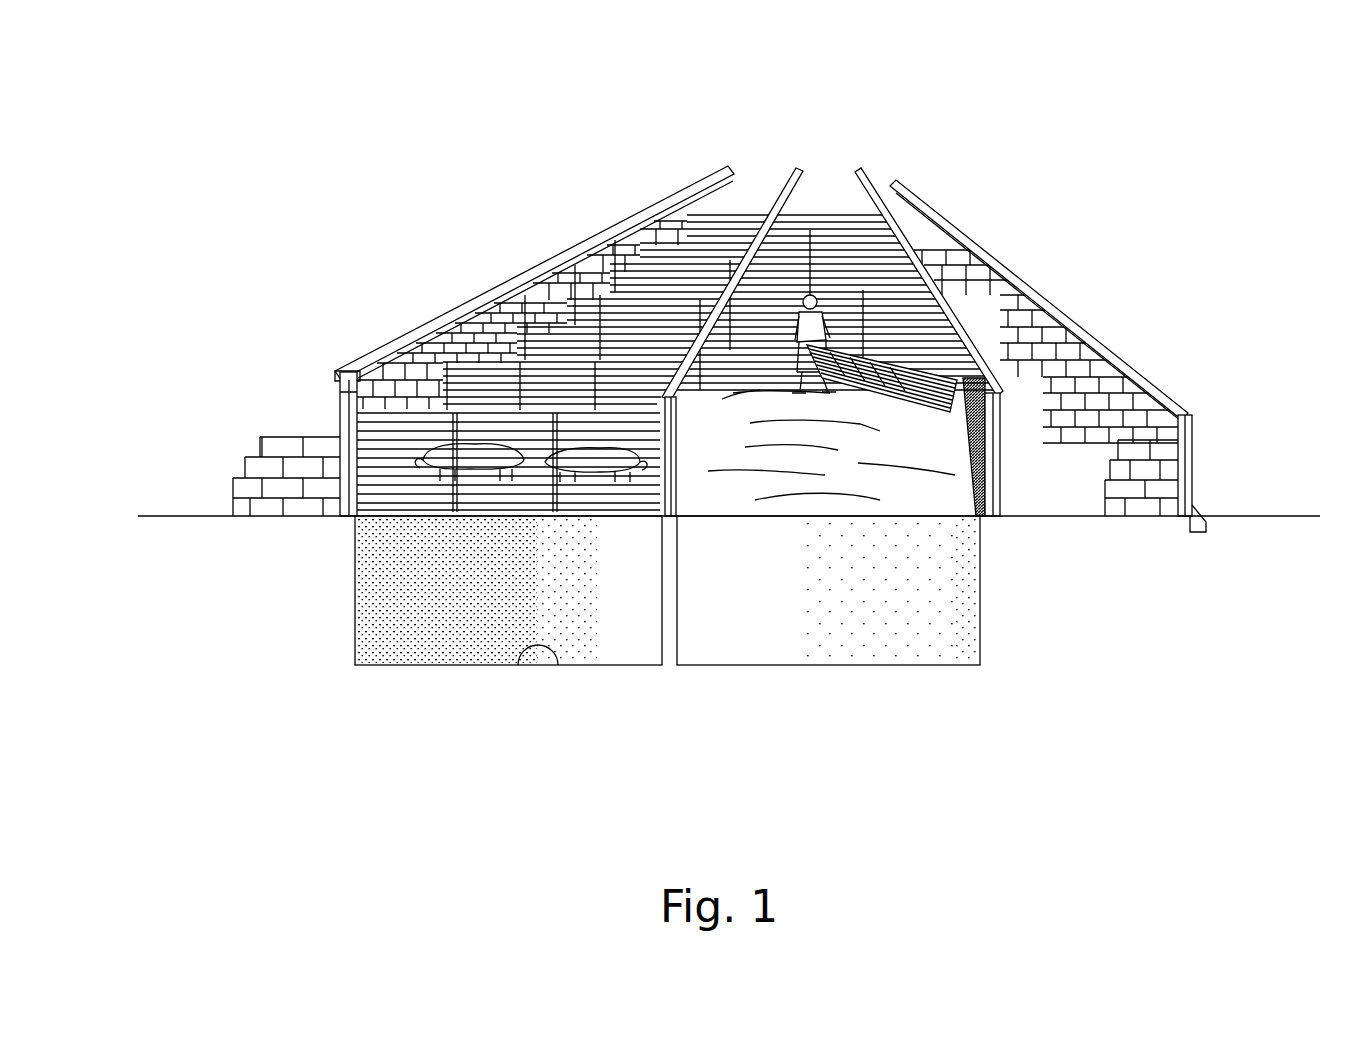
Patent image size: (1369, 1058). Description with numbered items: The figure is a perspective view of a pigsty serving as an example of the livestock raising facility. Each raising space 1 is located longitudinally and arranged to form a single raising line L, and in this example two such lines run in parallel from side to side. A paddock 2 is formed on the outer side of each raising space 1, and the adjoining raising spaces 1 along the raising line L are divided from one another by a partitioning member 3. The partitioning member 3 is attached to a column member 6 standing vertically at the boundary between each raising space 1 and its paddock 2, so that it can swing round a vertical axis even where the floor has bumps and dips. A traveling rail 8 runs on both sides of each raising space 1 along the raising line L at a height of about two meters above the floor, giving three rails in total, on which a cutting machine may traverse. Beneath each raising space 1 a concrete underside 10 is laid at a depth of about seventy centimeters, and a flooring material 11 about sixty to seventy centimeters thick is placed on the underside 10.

The raising space 1 is at (500, 395).
The paddock 2 is at (313, 433).
The partitioning member 3 is at (860, 397).
The column member 6 is at (347, 415).
The traveling rail 8 is at (735, 194).
The concrete underside 10 is at (518, 655).
The flooring material 11 is at (717, 655).
The raising line L is at (835, 197).